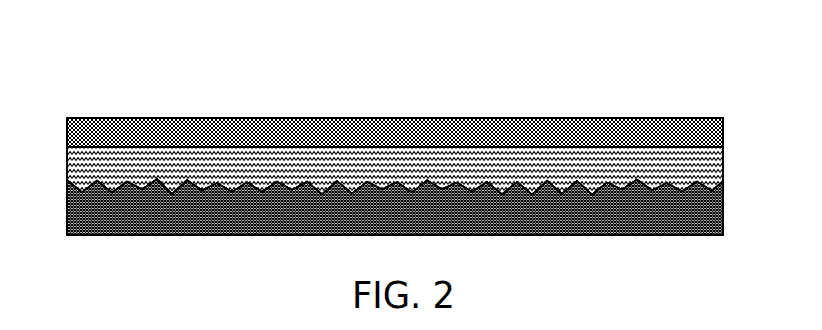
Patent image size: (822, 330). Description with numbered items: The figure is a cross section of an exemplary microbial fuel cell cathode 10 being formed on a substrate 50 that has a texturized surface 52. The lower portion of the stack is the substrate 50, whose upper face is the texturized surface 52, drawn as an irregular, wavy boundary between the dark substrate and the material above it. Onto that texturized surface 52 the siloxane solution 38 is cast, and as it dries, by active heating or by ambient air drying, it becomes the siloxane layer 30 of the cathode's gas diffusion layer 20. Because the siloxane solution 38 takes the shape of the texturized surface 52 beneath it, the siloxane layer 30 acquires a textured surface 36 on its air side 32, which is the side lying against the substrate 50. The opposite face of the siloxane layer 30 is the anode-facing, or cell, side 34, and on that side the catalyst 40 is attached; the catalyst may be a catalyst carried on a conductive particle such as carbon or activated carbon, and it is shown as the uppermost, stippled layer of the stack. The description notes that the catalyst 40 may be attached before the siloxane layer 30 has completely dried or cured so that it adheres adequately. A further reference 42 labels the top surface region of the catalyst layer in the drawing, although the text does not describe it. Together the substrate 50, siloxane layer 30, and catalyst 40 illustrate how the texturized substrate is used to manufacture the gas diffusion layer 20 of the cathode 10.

The microbial fuel cell cathode 10 is at (155, 83).
The gas diffusion layer 20 is at (695, 170).
The siloxane layer 30 is at (82, 155).
The air side 32 is at (598, 217).
The anode-facing side 34 is at (598, 140).
The textured surface 36 is at (661, 217).
The siloxane solution 38 is at (530, 165).
The catalyst 40 is at (68, 119).
The top surface 42 is at (110, 118).
The substrate 50 is at (721, 214).
The texturized surface 52 is at (416, 190).